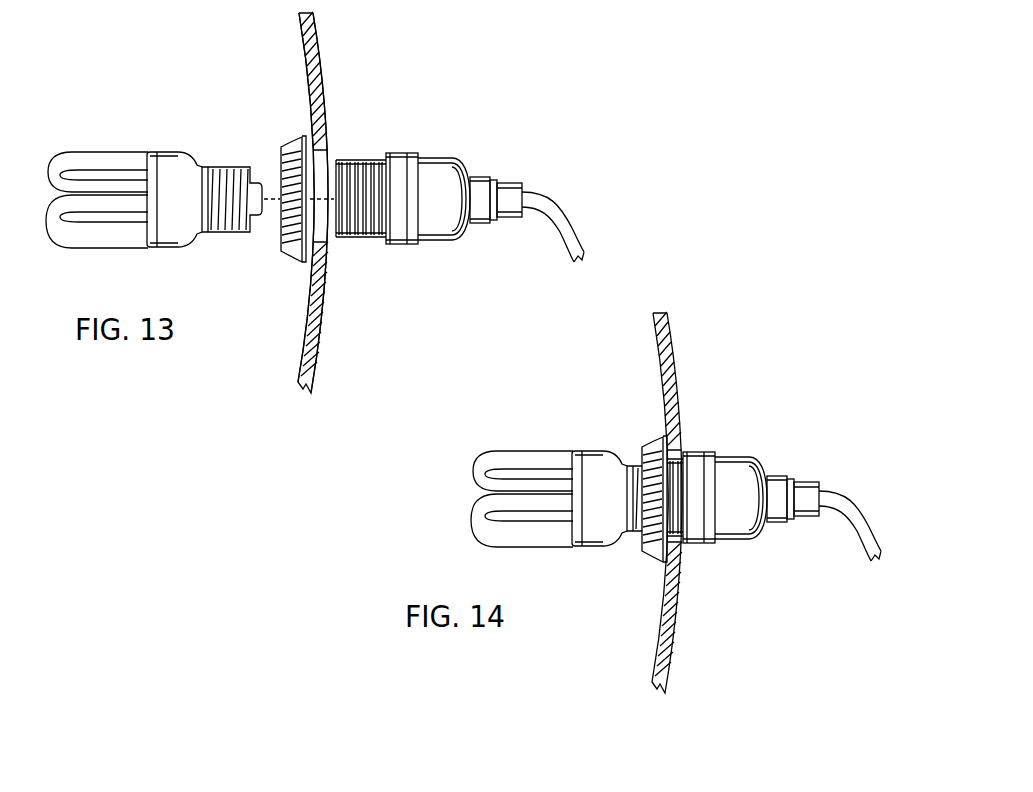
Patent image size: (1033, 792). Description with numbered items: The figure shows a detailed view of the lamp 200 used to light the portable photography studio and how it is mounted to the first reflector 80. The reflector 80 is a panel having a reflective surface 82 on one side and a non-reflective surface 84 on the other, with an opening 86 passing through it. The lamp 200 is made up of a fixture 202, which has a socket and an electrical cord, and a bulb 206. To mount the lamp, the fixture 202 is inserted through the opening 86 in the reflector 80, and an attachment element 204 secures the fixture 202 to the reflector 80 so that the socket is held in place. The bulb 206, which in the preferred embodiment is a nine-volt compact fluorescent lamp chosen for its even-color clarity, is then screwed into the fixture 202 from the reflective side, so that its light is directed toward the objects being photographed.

In FIG. 13, the first reflector 80 is at (323, 77).
In FIG. 14, the first reflector 80 is at (670, 337).
In FIG. 13, the reflective surface 82 is at (305, 53).
In FIG. 13, the non-reflective surface 84 is at (322, 328).
In FIG. 13, the opening 86 is at (322, 235).
In FIG. 13, the lamp 200 is at (449, 111).
In FIG. 14, the lamp 200 is at (738, 399).
In FIG. 13, the fixture 202 is at (437, 226).
In FIG. 14, the fixture 202 is at (732, 528).
In FIG. 13, the attachment element 204 is at (295, 247).
In FIG. 14, the attachment element 204 is at (654, 557).
In FIG. 13, the bulb 206 is at (103, 170).
In FIG. 14, the bulb 206 is at (518, 472).